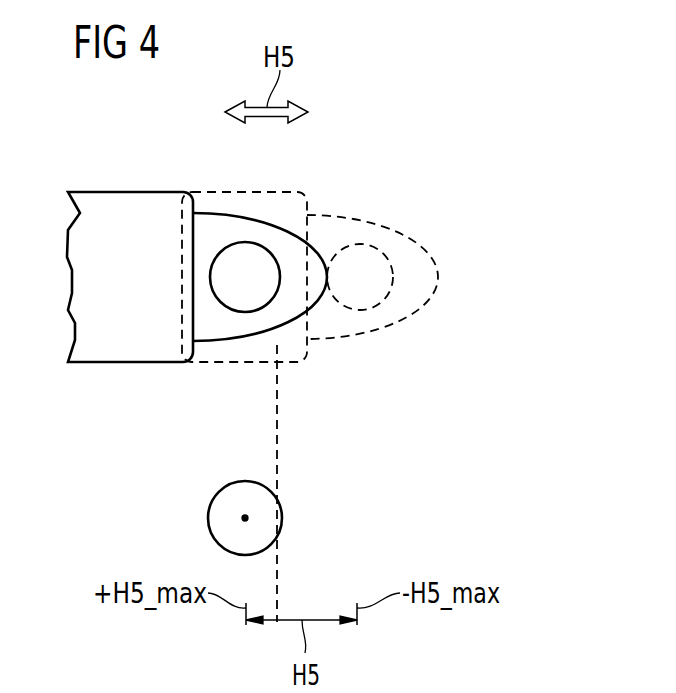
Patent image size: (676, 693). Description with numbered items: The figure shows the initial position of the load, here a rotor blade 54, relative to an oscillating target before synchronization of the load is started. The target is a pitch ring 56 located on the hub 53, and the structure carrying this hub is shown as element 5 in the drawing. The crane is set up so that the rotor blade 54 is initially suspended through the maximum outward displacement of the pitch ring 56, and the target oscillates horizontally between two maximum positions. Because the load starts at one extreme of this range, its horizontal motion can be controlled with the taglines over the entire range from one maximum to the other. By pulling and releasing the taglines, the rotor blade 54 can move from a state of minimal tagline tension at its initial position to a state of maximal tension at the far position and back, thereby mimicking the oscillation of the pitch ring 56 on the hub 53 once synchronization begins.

The body / wall element 5 is at (117, 168).
The hub 53 is at (230, 228).
The pitch ring 56 is at (263, 268).
The rotor blade 54 is at (275, 518).